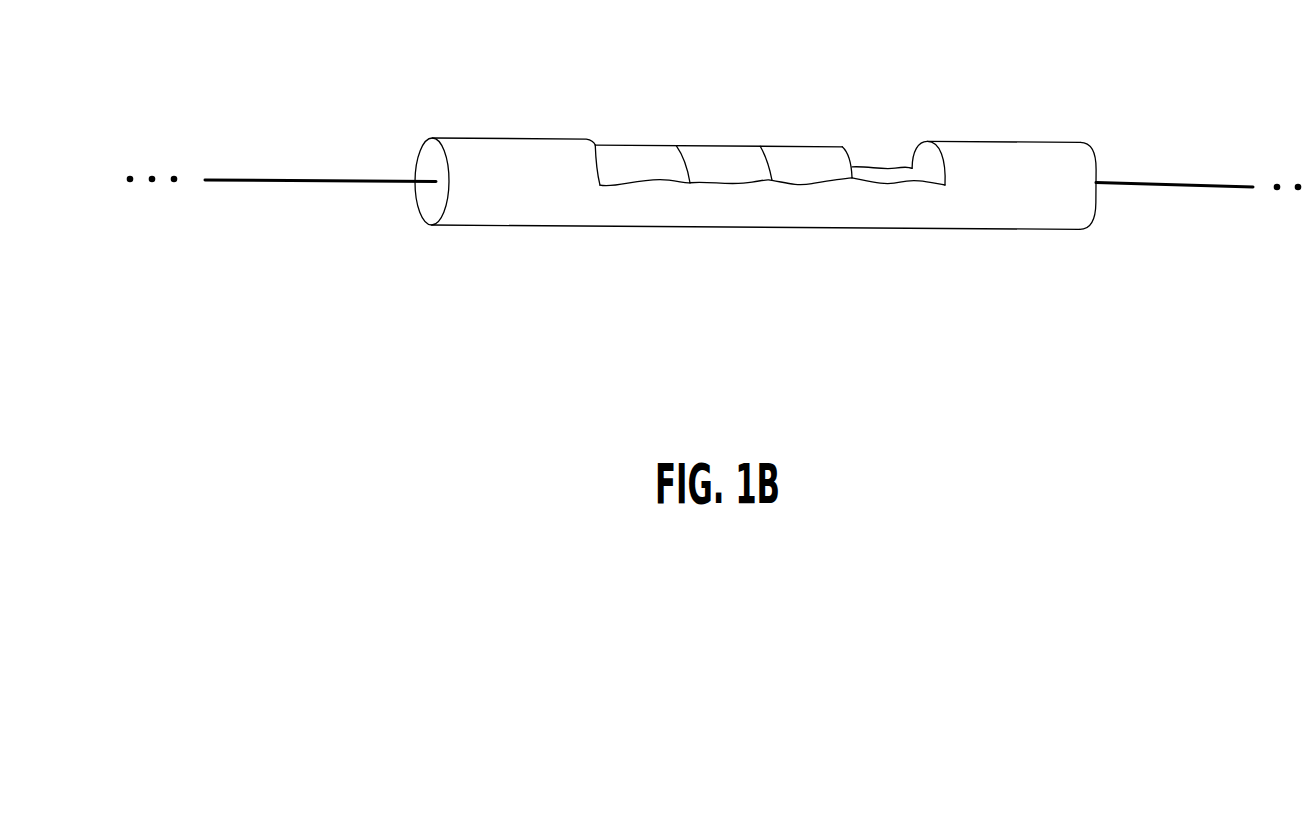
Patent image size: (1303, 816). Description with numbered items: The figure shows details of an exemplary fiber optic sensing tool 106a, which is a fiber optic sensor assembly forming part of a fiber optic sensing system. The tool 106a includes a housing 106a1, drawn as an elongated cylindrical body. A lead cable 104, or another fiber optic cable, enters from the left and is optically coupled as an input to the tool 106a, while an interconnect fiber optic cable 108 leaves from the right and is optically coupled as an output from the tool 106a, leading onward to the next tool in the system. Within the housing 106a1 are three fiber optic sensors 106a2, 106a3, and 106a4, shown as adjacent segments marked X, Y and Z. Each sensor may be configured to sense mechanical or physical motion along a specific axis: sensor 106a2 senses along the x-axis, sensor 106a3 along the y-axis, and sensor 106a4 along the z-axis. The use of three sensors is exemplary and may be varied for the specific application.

The lead cable 104 is at (262, 178).
The interconnect fiber optic cable 108 is at (1168, 186).
The fiber optic sensing tool 106a is at (755, 208).
The housing 106a1 is at (705, 228).
The fiber optic sensor 106a2 is at (624, 152).
The fiber optic sensor 106a3 is at (707, 155).
The fiber optic sensor 106a4 is at (826, 152).